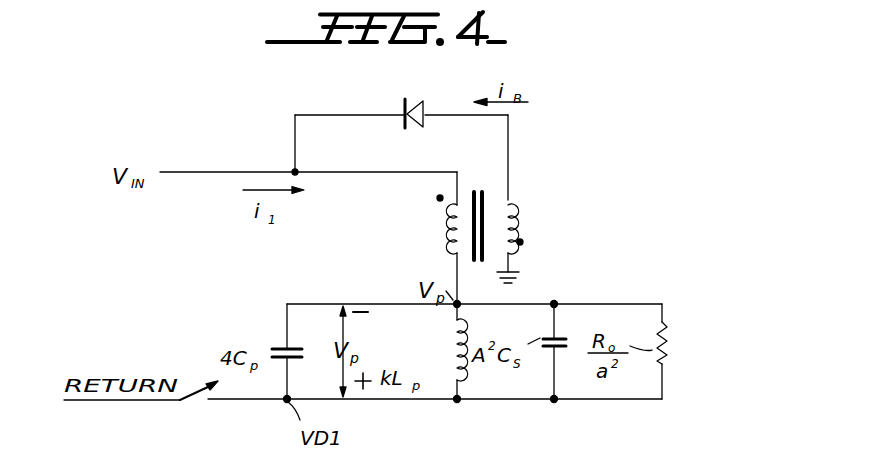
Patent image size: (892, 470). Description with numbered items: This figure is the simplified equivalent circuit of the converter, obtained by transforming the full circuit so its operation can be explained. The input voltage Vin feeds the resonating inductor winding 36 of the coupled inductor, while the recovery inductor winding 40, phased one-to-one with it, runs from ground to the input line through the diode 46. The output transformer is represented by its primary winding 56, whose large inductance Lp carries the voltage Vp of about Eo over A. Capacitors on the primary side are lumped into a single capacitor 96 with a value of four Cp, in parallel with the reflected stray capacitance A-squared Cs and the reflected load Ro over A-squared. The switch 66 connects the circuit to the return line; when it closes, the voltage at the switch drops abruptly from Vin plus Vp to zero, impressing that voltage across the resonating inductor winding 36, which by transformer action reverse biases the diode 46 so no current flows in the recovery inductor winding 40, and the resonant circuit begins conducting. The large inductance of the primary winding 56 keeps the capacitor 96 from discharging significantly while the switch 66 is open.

The diode 46 is at (410, 104).
The resonating inductor winding 36 is at (450, 229).
The recovery inductor winding 40 is at (517, 224).
The single capacitor 96 is at (273, 344).
The primary winding 56 is at (445, 352).
The switch 66 is at (196, 404).